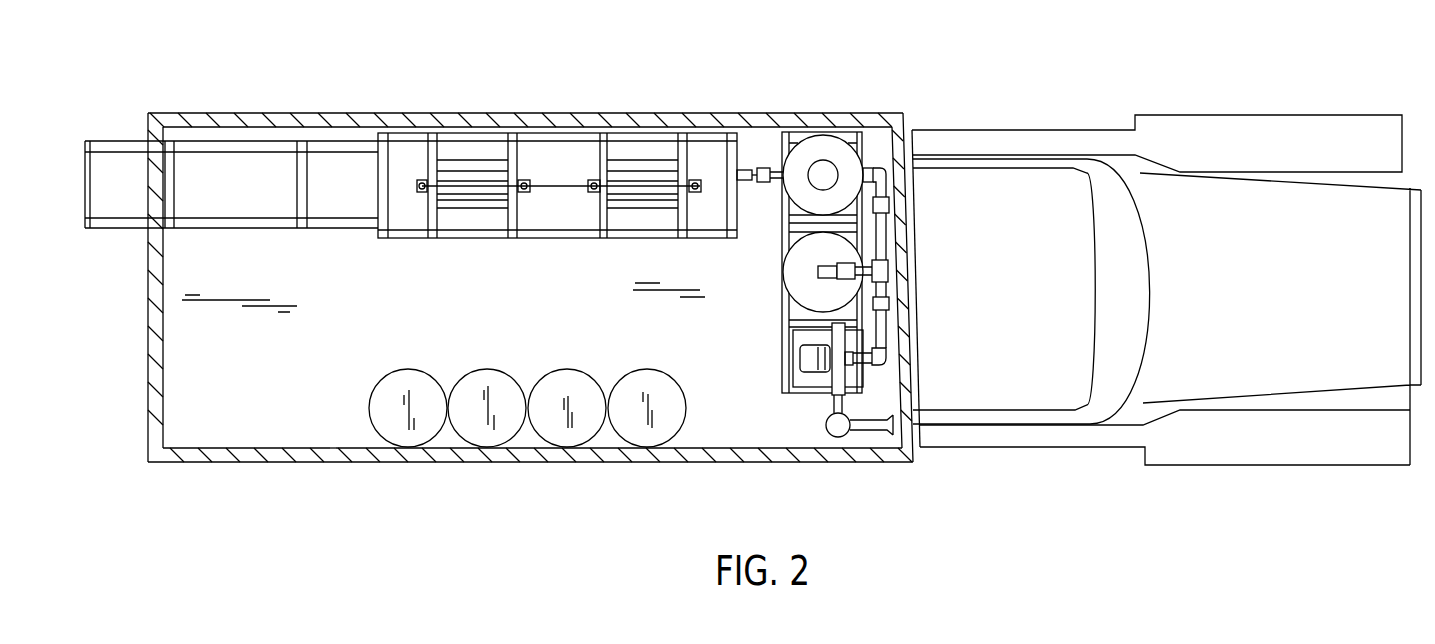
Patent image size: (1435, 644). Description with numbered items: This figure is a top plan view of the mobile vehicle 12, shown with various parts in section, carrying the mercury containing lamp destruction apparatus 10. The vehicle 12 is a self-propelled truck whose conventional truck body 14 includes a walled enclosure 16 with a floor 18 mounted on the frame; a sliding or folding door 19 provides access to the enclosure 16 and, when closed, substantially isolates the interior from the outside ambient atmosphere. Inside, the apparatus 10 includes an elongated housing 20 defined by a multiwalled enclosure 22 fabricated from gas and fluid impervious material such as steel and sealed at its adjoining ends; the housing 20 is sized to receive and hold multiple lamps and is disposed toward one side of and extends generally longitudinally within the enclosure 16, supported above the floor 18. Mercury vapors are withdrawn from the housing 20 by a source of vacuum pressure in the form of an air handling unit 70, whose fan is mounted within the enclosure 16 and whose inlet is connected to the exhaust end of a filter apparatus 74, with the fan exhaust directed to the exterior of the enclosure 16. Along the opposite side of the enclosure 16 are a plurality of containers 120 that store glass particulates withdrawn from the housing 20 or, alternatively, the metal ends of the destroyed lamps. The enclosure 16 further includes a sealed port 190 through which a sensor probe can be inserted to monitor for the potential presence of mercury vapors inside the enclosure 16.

The lamp destruction apparatus 10 is at (763, 84).
The mobile vehicle 12 is at (1023, 76).
The truck body 14 is at (278, 463).
The walled enclosure 16 is at (228, 465).
The floor 18 is at (232, 427).
The door 19 is at (148, 403).
The sealed port 190 is at (333, 448).
The housing 20 is at (456, 247).
The multiwalled enclosure 22 is at (378, 237).
The air handling unit 70 is at (813, 408).
The filter apparatus 74 is at (783, 296).
The containers 120 is at (567, 370).